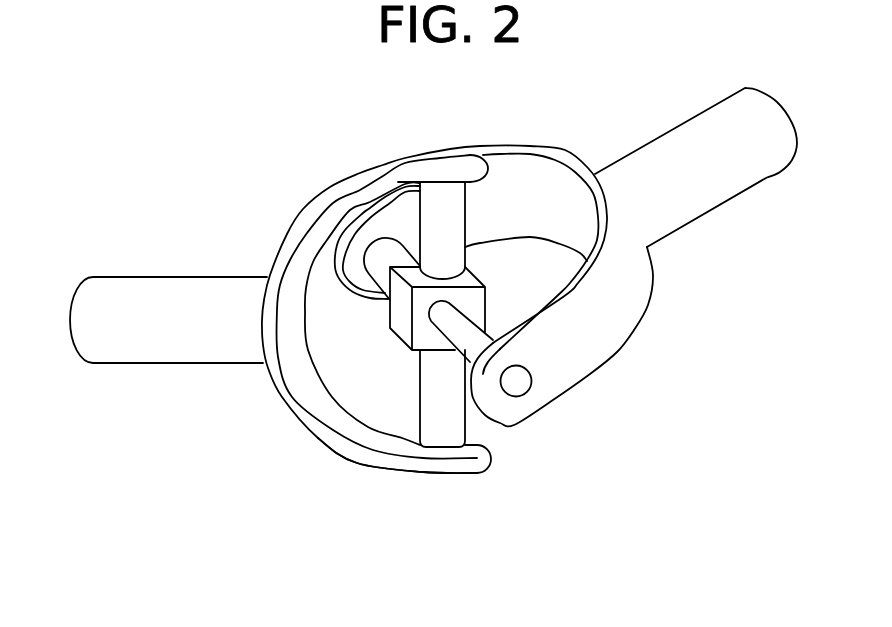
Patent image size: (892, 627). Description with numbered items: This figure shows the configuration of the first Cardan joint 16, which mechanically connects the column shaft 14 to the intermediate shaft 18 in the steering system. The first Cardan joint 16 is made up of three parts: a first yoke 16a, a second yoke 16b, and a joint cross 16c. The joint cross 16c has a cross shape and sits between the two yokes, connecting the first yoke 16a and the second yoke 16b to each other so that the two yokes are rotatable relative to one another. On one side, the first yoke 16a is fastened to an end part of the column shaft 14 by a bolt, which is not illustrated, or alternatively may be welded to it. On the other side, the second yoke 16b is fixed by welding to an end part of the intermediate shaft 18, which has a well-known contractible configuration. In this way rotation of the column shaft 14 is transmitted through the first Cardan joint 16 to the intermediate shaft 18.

The column shaft 14 is at (698, 218).
The first Cardan joint 16 is at (457, 288).
The first yoke 16a is at (592, 352).
The second yoke 16b is at (333, 450).
The joint cross 16c is at (465, 218).
The intermediate shaft 18 is at (150, 365).